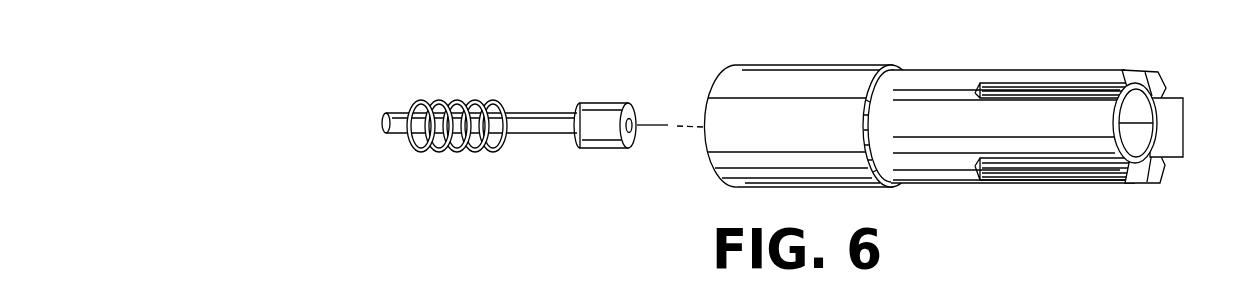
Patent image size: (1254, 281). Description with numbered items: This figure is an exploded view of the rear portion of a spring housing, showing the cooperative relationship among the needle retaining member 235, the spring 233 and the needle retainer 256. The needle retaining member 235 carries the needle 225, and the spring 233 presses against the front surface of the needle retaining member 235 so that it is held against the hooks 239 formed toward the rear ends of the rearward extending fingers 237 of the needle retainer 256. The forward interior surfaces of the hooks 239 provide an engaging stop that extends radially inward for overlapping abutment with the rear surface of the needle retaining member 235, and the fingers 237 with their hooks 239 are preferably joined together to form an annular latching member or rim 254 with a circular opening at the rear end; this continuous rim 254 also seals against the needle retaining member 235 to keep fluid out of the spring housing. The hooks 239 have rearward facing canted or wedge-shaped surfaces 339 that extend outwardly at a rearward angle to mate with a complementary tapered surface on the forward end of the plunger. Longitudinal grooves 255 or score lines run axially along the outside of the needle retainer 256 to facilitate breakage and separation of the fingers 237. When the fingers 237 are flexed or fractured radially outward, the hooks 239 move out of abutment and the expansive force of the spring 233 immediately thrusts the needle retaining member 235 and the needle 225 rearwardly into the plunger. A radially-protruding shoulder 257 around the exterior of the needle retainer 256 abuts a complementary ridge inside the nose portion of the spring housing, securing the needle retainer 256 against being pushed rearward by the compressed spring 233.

The needle 225 is at (520, 136).
The spring 233 is at (440, 150).
The needle retaining member 235 is at (598, 134).
The fingers 237 is at (1074, 148).
The hooks 239 is at (1160, 183).
The annular latching member or rim 254 is at (1142, 110).
The longitudinal grooves 255 is at (1045, 95).
The needle retainer 256 is at (977, 195).
The radially-protruding shoulder 257 is at (900, 189).
The canted or wedge-shaped surfaces 339 is at (1168, 138).